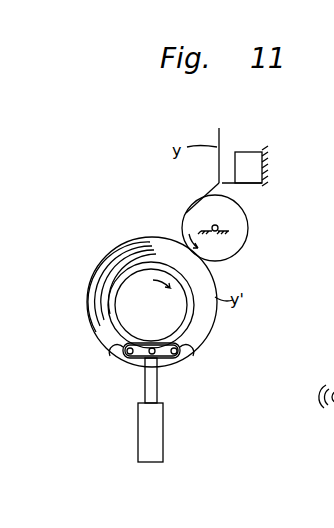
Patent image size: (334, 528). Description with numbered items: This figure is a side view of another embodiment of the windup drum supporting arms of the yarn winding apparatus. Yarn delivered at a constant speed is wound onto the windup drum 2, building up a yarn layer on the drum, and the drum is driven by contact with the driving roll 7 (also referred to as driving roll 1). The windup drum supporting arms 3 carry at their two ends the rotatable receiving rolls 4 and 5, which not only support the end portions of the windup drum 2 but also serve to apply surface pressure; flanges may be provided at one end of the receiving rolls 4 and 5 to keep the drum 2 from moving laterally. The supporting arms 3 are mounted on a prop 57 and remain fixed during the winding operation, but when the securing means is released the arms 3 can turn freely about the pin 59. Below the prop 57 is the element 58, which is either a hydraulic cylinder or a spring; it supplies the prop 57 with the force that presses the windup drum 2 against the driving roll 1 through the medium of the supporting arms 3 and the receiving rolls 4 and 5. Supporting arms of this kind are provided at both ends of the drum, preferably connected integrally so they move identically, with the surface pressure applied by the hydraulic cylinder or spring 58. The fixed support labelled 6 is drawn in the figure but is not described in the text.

The driving roll 1 is at (244, 248).
The windup drum 2 is at (192, 357).
The windup drum supporting arms 3 is at (140, 356).
The receiving roll 4 is at (116, 349).
The receiving roll 5 is at (186, 357).
The fixed support 6 is at (243, 152).
The driving roll 7 is at (222, 185).
The prop 57 is at (157, 390).
The hydraulic cylinder or spring 58 is at (163, 428).
The pin 59 is at (155, 345).